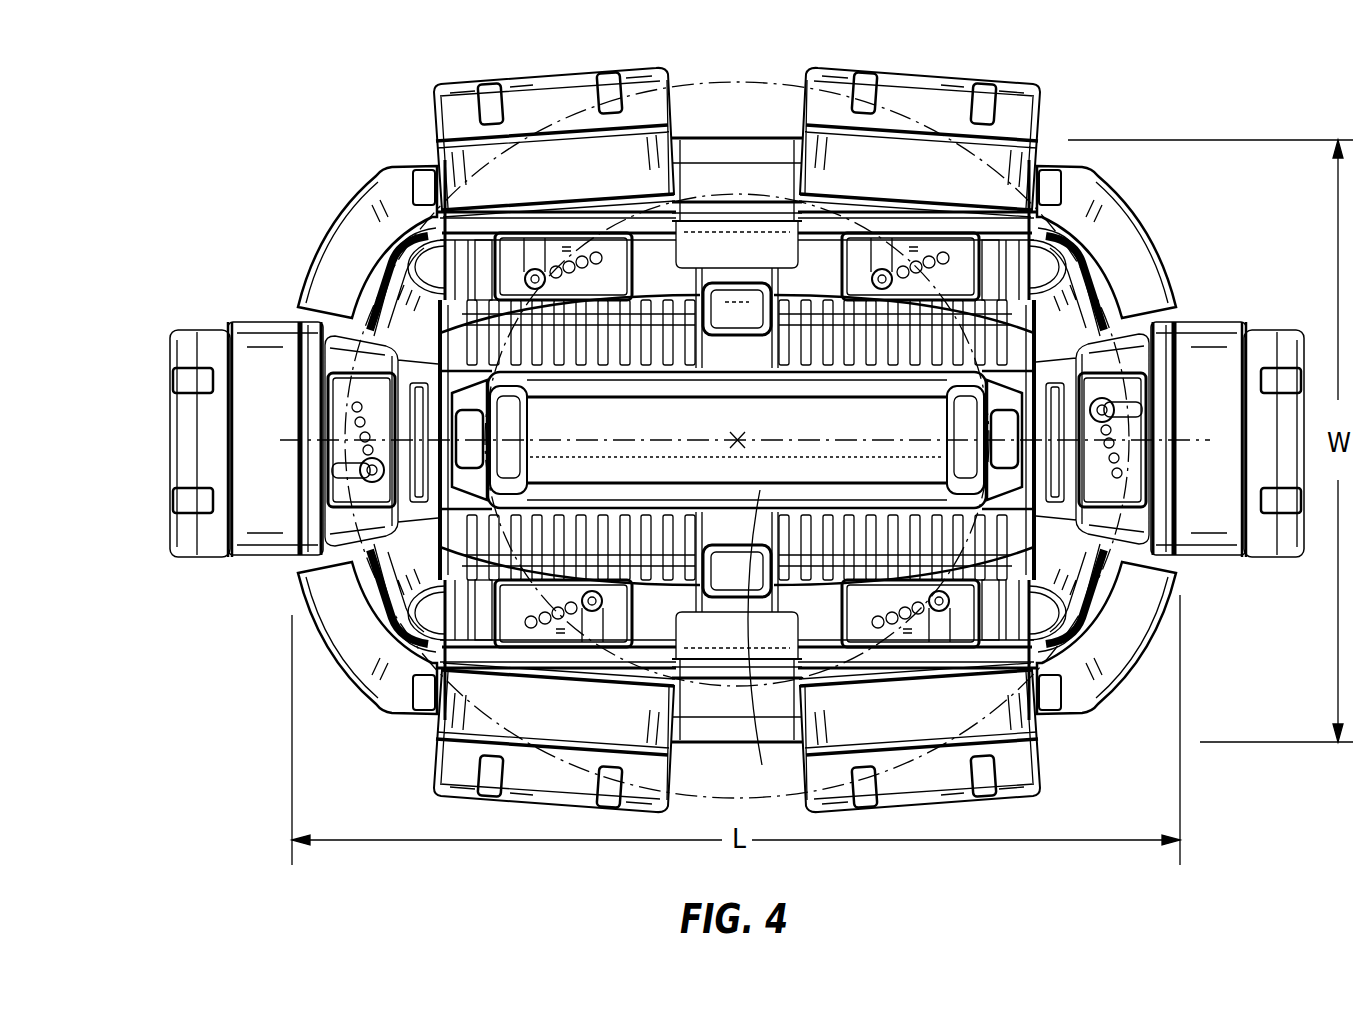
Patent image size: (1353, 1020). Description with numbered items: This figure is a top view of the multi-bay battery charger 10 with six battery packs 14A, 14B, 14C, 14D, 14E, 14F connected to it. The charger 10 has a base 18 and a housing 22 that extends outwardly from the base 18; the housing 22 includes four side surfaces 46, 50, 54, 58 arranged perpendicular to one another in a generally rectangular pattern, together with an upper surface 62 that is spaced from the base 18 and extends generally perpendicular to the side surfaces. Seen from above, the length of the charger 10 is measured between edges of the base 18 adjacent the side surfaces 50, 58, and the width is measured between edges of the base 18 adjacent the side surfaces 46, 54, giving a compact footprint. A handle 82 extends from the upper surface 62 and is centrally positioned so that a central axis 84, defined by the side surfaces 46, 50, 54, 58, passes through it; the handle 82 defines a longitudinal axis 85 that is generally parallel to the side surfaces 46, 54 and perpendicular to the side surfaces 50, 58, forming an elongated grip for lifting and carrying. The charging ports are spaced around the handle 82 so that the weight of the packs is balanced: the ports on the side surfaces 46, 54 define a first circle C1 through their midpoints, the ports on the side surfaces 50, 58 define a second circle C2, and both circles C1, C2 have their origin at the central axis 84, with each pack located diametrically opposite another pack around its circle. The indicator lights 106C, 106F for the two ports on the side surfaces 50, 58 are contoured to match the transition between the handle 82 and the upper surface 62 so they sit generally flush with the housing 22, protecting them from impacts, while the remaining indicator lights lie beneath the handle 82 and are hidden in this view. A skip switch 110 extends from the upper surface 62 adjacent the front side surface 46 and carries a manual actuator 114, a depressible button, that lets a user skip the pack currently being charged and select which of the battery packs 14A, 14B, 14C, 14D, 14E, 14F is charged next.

The multi-bay battery charger 10 is at (1140, 98).
The battery pack 14A is at (928, 90).
The battery pack 14B is at (552, 90).
The battery pack 14C is at (170, 408).
The battery pack 14D is at (437, 788).
The battery pack 14E is at (1043, 796).
The battery pack 14F is at (1288, 535).
The base 18 is at (1110, 222).
The housing 22 is at (398, 583).
The side surface 46 is at (706, 234).
The side surface 50 is at (373, 307).
The side surface 54 is at (710, 637).
The side surface 58 is at (1078, 610).
The upper surface 62 is at (763, 641).
The handle 82 is at (1035, 300).
The central axis 84 is at (735, 438).
The longitudinal axis 85 is at (1165, 445).
The indicator lights 106C is at (458, 473).
The indicator lights 106F is at (1003, 398).
The skip switch 110 is at (758, 290).
The manual actuator 114 is at (733, 294).
The first circle C1 is at (575, 225).
The second circle C2 is at (962, 173).